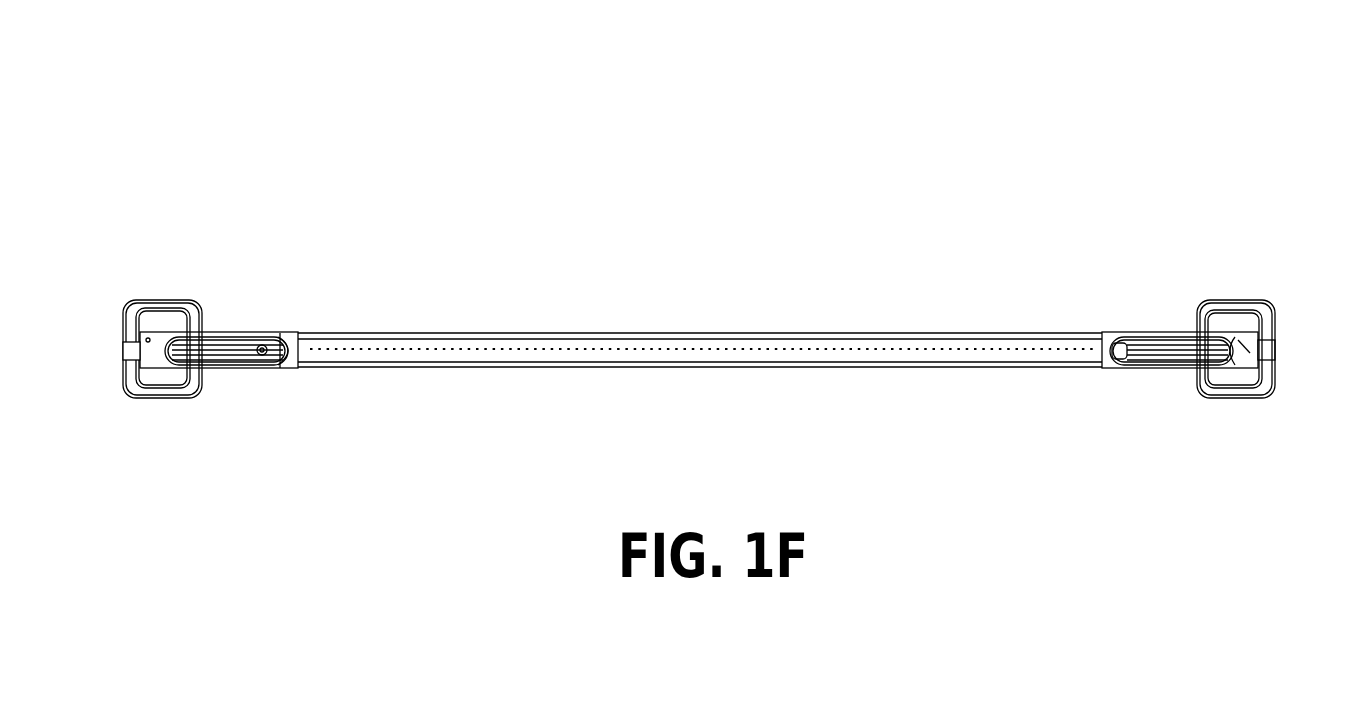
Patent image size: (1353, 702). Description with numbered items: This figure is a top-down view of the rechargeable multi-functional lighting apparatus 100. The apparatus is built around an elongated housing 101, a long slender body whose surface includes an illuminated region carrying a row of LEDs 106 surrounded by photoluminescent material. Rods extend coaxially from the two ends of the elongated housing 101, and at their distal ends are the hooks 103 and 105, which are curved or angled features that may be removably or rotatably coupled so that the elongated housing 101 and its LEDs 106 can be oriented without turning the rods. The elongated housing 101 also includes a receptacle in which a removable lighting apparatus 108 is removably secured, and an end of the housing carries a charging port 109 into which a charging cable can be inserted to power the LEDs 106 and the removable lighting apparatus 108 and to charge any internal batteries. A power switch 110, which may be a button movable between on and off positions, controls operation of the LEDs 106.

The multi-functional lighting apparatus 100 is at (238, 92).
The elongated housing 101 is at (722, 335).
The hook 103 is at (1238, 398).
The hook 105 is at (163, 400).
The LEDs 106 is at (595, 355).
The removable lighting apparatus 108 is at (1168, 345).
The charging port 109 is at (1243, 342).
The power switch 110 is at (265, 345).